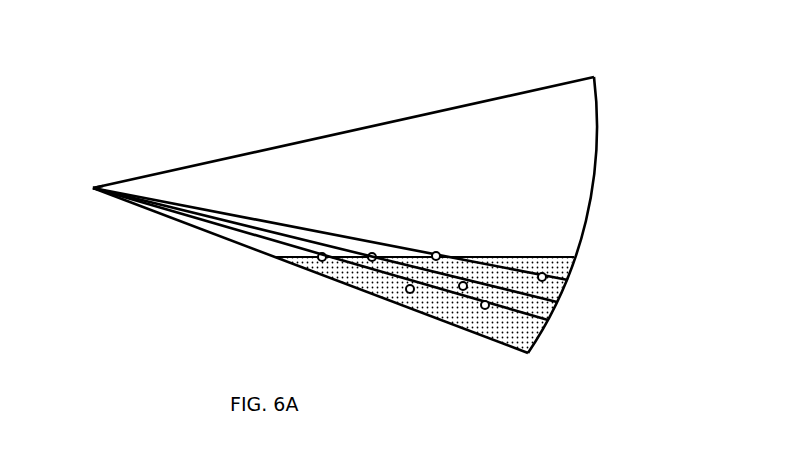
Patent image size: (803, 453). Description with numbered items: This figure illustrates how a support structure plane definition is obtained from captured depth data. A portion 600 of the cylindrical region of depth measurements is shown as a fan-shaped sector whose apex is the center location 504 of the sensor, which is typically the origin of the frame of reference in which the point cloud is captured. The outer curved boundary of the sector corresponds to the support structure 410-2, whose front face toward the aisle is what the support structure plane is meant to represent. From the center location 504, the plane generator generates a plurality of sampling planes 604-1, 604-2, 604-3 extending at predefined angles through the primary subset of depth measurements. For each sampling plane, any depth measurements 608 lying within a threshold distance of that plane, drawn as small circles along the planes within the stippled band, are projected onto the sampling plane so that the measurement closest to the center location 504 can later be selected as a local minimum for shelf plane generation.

The center location 504 is at (93, 188).
The portion of the region 600 is at (355, 130).
The support structure 410-2 is at (577, 190).
The sampling plane 604-3 is at (577, 282).
The sampling plane 604-2 is at (557, 302).
The sampling plane 604-1 is at (545, 323).
The depth measurements 608 is at (409, 293).